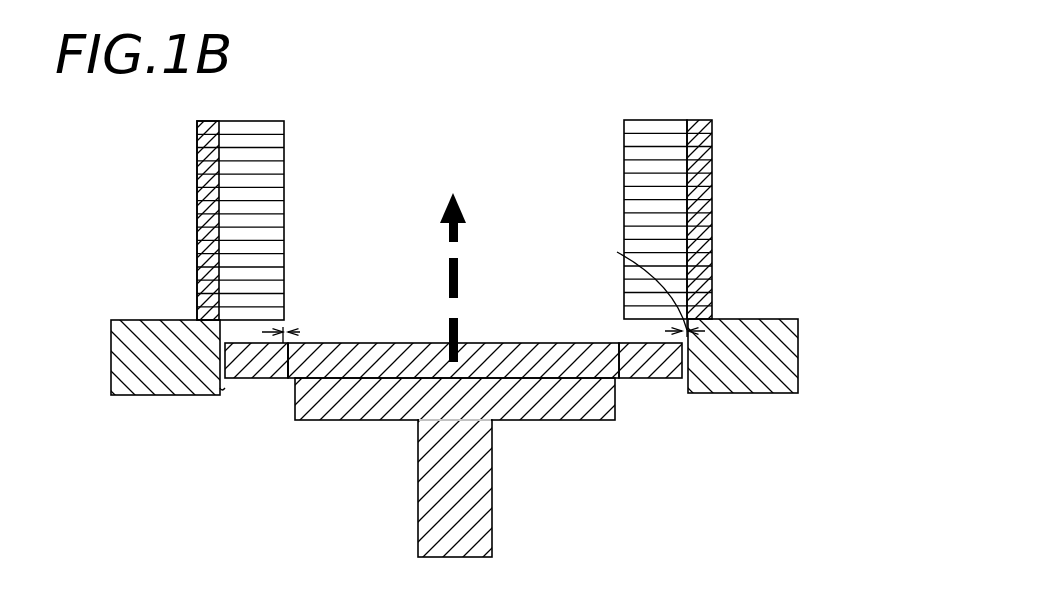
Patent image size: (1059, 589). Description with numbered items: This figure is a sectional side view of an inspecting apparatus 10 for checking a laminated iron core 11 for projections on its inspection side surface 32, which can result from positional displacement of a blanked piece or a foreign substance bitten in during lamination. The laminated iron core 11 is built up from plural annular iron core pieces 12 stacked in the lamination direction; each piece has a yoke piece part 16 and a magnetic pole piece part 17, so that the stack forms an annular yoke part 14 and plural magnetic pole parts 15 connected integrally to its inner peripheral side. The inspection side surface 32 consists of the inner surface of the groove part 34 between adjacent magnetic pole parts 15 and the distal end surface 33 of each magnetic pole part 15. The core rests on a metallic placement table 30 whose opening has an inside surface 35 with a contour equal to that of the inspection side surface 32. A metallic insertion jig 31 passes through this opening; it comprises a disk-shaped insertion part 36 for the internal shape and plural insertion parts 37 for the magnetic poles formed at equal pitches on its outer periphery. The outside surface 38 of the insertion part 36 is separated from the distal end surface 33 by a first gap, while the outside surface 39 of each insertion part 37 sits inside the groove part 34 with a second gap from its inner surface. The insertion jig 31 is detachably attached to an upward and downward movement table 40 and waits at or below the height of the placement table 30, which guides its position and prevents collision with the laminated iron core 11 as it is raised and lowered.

The inspecting apparatus 10 is at (493, 302).
The laminated iron core 11 is at (672, 183).
The iron core piece 12 is at (210, 302).
The yoke part 14 is at (703, 117).
The magnetic pole part 15 is at (650, 117).
The yoke piece part 16 is at (200, 228).
The magnetic pole piece part 17 is at (632, 188).
The placement table 30 is at (806, 348).
The insertion jig 31 is at (453, 380).
The inspection side surface 32 is at (248, 218).
The distal end surface 33 is at (288, 139).
The groove part 34 is at (225, 178).
The inside surface 35 is at (222, 388).
The insertion part for internal shape 36 is at (543, 352).
The insertion part for magnetic poles 37 is at (652, 348).
The outside surface 38 is at (285, 368).
The outside surface 39 is at (250, 372).
The upward and downward movement table 40 is at (633, 420).